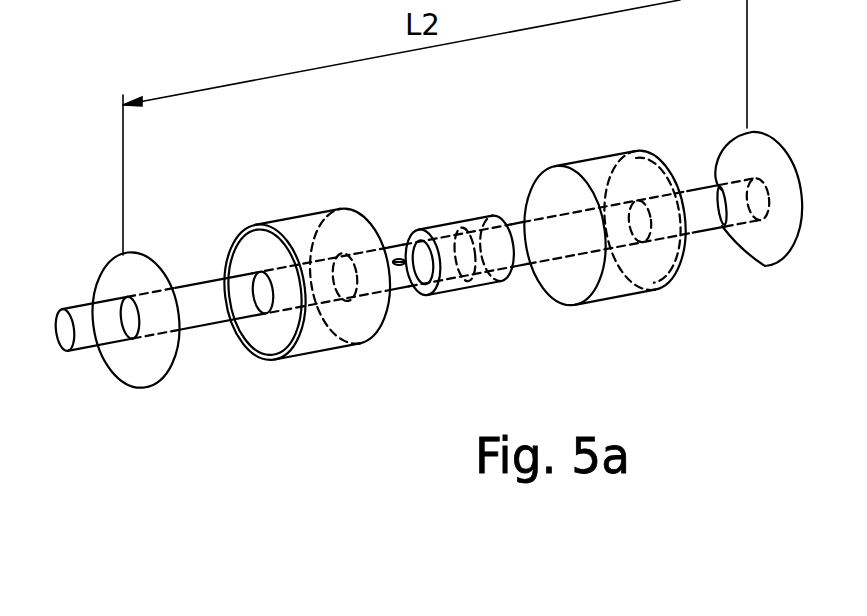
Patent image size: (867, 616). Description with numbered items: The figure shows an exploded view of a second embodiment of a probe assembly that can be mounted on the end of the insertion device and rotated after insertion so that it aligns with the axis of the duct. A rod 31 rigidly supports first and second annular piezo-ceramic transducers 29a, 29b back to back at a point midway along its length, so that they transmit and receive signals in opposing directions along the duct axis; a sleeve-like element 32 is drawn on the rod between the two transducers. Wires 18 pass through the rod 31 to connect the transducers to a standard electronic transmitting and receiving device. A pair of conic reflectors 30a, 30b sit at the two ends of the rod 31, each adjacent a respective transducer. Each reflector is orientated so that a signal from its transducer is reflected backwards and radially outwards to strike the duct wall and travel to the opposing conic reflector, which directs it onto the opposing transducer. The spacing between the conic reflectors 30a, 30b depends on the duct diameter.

The rod 31 is at (196, 285).
The wires 18 is at (397, 258).
The spacer sleeve 32 is at (453, 227).
The first annular piezo-ceramic transducer 29a is at (283, 347).
The second annular piezo-ceramic transducer 29b is at (634, 262).
The conic reflector 30a is at (153, 362).
The conic reflector 30b is at (775, 240).